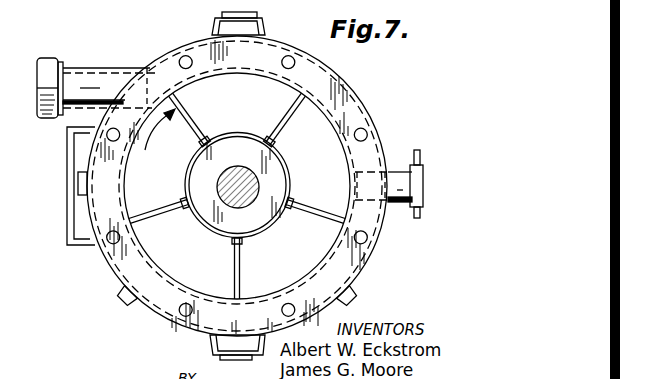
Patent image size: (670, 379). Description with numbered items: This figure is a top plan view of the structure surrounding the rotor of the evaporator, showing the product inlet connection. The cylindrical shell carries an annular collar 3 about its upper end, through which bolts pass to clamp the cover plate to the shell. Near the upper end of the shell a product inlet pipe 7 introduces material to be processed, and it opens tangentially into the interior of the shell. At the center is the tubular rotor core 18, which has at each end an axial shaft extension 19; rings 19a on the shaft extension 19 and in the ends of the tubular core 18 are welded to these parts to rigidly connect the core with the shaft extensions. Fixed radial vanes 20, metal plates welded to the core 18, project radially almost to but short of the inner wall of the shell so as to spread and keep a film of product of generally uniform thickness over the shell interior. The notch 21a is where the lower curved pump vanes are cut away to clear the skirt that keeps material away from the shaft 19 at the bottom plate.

The annular collar 3 is at (378, 115).
The product inlet pipe 7 is at (96, 68).
The tubular rotor core 18 is at (185, 165).
The shaft extension 19 is at (263, 175).
The rings 19a is at (333, 190).
The vanes 20 is at (288, 110).
The notch 21a is at (30, 52).